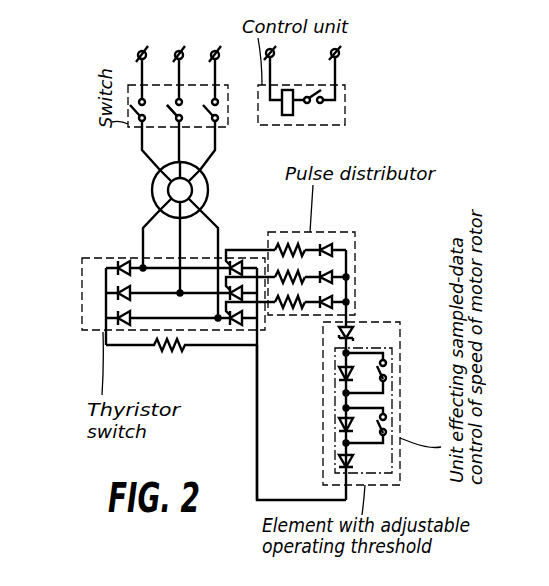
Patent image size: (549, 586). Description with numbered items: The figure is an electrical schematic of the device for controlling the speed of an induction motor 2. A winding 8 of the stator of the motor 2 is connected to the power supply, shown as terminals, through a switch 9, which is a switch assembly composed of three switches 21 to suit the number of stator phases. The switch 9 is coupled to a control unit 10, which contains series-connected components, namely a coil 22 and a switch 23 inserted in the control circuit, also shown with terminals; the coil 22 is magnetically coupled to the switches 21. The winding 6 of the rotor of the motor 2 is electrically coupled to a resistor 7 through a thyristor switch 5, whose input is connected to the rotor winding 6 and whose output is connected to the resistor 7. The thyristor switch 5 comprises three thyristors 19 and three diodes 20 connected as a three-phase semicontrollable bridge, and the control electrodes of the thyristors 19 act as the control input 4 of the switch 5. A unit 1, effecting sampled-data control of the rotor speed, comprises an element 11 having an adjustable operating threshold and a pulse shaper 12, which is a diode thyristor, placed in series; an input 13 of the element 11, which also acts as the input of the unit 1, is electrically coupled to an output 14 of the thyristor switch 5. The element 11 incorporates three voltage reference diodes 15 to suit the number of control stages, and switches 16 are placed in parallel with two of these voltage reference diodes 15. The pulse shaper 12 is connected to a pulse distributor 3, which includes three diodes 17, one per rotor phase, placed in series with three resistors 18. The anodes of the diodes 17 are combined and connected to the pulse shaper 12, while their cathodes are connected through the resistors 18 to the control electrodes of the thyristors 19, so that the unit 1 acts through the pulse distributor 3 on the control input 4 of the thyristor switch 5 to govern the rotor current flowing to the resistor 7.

The unit effecting sampled-data control 1 is at (364, 397).
The motor 2 is at (200, 228).
The pulse distributor 3 is at (324, 255).
The control input 4 is at (224, 256).
The thyristor switch 5 is at (213, 360).
The winding of the rotor 6 is at (193, 187).
The resistor 7 is at (178, 350).
The winding of the stator 8 is at (207, 201).
The switch 9 is at (131, 130).
The control unit 10 is at (316, 101).
The element having an adjustable operating threshold 11 is at (398, 463).
The pulse shaper 12 is at (352, 330).
The input 13 is at (340, 479).
The output 14 is at (255, 348).
The voltage reference diodes 15 is at (342, 370).
The switches 16 is at (390, 358).
The diodes 17 is at (348, 250).
The resistors 18 is at (287, 249).
The thyristors 19 is at (258, 318).
The diodes 20 is at (126, 259).
The switches 21 is at (172, 105).
The coil 22 is at (288, 89).
The switch 23 is at (313, 106).